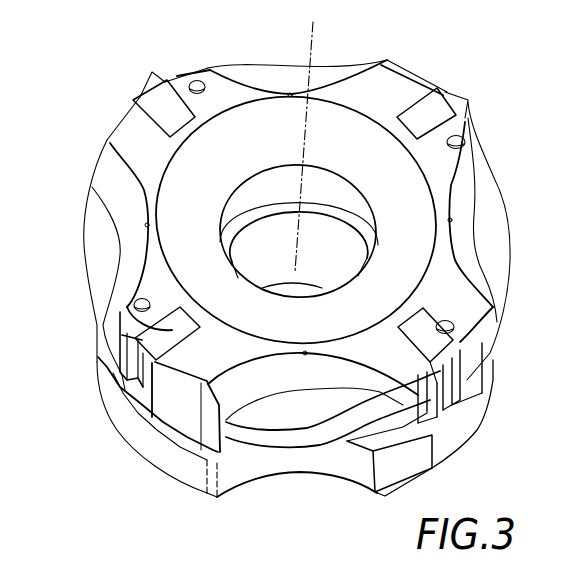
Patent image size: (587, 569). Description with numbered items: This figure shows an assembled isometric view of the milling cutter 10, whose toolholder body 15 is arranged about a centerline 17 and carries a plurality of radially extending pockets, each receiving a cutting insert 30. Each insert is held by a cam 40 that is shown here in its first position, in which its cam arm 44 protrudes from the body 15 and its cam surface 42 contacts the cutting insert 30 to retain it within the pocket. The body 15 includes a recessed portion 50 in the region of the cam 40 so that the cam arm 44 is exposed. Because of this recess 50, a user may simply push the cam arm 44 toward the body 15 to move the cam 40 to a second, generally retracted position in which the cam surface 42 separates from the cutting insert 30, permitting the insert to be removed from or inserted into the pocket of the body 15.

The milling cutter 10 is at (44, 123).
The body 15 is at (133, 133).
The centerline 17 is at (313, 37).
The cutting insert 30 is at (452, 342).
The cam 40 is at (297, 412).
The cam surface 42 is at (389, 454).
The cam arm 44 is at (268, 413).
The recessed portion 50 is at (333, 407).